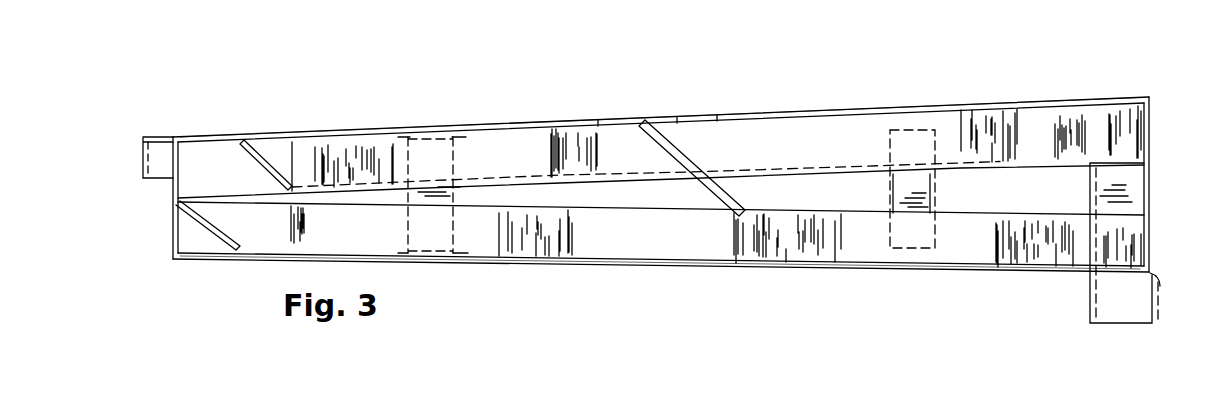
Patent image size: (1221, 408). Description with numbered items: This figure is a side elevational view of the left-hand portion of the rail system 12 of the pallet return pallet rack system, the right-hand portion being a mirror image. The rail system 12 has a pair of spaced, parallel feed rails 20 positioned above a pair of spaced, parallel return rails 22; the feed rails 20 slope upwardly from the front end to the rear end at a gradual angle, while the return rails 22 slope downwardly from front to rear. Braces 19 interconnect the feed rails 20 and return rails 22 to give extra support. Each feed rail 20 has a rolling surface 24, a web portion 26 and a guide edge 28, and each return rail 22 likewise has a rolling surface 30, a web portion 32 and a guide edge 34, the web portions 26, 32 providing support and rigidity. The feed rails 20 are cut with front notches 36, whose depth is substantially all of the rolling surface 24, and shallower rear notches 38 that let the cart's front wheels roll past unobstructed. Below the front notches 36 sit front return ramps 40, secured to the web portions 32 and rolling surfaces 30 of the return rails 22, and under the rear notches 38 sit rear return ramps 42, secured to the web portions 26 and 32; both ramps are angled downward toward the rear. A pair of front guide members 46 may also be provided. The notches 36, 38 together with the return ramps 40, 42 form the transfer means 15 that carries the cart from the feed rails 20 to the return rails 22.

The rail system 12 is at (159, 197).
The transfer means 15 is at (213, 165).
The braces 19 is at (462, 196).
The feed rails 20 is at (1152, 104).
The return rails 22 is at (1150, 239).
The rolling surface 24 is at (832, 111).
The web portion 26 is at (878, 141).
The guide edge 28 is at (592, 122).
The rolling surface 30 is at (980, 260).
The web portion 32 is at (787, 255).
The guide edge 34 is at (542, 261).
The front notches 36 is at (199, 137).
The rear notches 38 is at (695, 115).
The front return ramps 40 is at (210, 236).
The rear return ramps 42 is at (736, 197).
The front guide members 46 is at (291, 162).